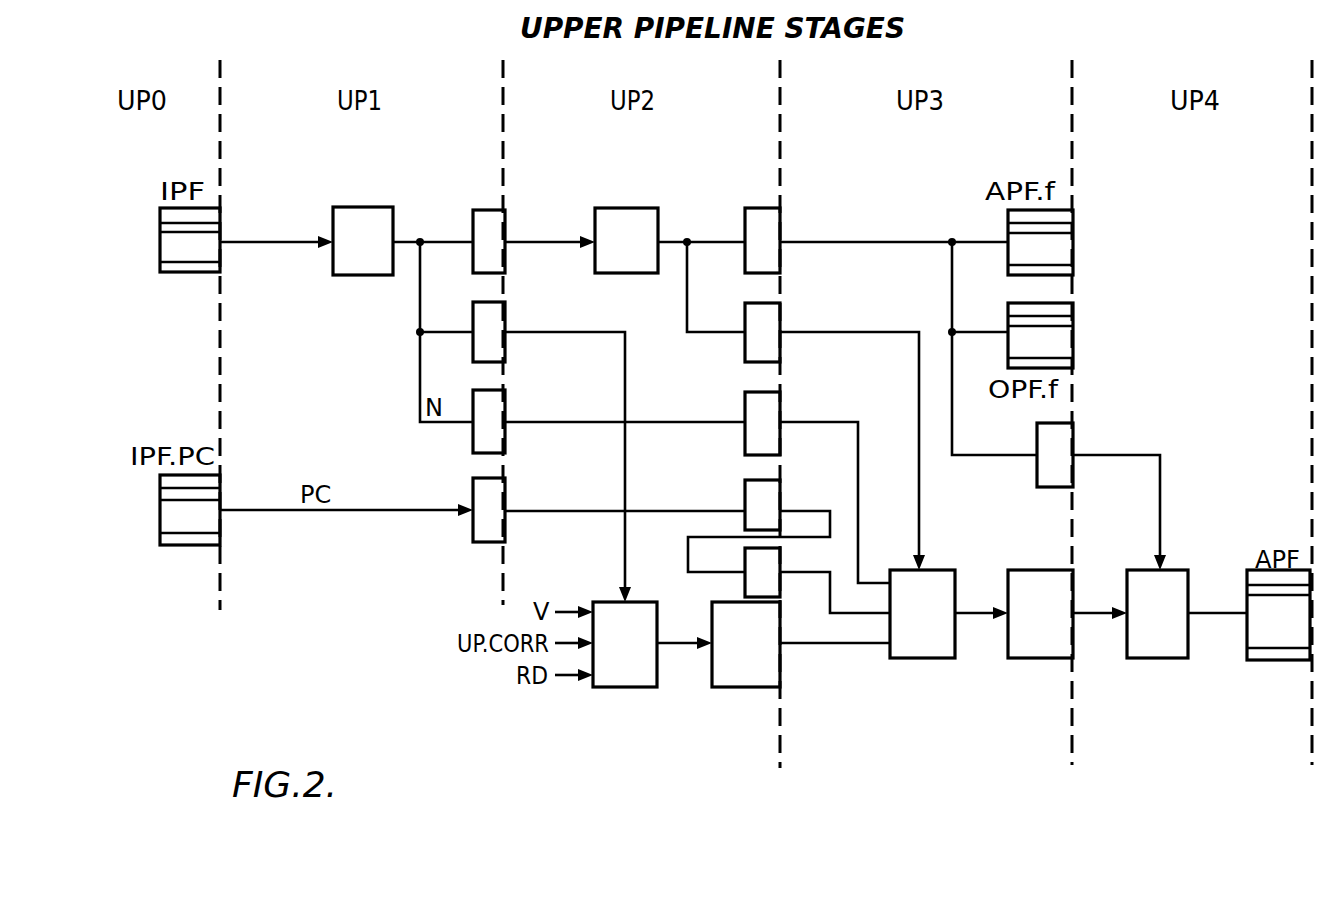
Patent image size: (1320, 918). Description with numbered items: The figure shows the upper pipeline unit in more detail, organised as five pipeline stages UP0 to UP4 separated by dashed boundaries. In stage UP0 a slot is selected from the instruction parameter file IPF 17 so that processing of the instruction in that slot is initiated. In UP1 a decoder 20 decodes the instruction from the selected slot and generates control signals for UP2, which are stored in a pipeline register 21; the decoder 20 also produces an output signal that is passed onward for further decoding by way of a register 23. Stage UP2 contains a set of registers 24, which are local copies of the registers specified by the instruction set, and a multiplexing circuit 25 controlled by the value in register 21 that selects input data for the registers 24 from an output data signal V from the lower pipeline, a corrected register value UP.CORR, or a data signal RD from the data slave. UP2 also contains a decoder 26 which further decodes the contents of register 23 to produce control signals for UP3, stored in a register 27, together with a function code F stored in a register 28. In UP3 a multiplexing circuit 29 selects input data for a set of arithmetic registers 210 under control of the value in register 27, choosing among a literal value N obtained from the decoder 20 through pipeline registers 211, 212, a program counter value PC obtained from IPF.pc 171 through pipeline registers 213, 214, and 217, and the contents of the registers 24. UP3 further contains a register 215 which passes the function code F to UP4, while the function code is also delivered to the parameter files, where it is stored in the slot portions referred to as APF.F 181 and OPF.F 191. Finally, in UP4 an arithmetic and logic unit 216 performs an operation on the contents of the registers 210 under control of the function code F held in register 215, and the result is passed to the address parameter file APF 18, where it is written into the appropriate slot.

The instruction parameter file IPF 17 is at (190, 273).
The IPF.pc 171 is at (197, 545).
The decoder 20 is at (393, 228).
The register 23 is at (473, 222).
The pipeline register 21 is at (505, 318).
The pipeline register 211 is at (505, 440).
The pipeline register 213 is at (505, 492).
The decoder 26 is at (595, 222).
The register 28 is at (745, 222).
The register 27 is at (745, 312).
The pipeline register 212 is at (745, 437).
The pipeline register 214 is at (745, 488).
The pipeline register 217 is at (780, 558).
The multiplexing circuit 25 is at (620, 687).
The set of registers 24 is at (728, 687).
The multiplexing circuit 29 is at (930, 658).
The set of arithmetic registers 210 is at (1020, 658).
The register 215 is at (1040, 470).
The arithmetic and logic unit (ALU) 216 is at (1145, 658).
The address parameter file APF 18 is at (1258, 660).
The APF.F 181 is at (1073, 252).
The OPF.F 191 is at (1073, 342).